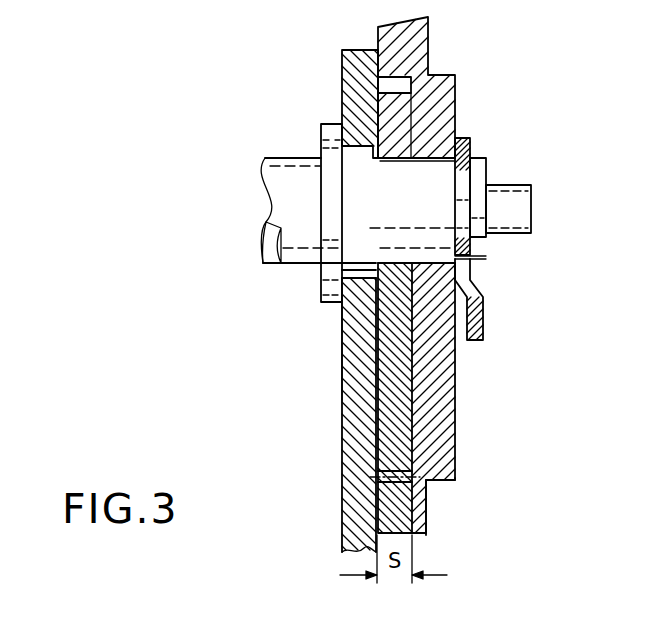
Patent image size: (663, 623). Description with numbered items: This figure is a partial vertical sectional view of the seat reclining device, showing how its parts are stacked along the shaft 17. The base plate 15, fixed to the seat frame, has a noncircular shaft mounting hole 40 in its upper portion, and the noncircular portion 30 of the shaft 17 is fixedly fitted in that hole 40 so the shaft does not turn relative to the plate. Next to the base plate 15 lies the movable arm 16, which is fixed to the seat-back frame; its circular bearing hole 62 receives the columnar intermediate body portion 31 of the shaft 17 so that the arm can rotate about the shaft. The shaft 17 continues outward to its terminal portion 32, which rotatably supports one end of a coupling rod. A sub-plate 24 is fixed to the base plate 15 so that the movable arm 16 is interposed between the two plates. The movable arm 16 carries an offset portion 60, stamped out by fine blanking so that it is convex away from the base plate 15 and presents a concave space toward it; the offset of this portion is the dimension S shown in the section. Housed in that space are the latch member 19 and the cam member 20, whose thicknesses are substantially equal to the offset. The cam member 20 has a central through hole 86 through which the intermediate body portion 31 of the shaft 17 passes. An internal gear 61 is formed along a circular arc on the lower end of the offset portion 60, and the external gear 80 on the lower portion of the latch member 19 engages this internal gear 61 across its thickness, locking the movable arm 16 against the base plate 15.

The base plate 15 is at (340, 350).
The movable arm 16 is at (458, 482).
The shaft 17 is at (268, 184).
The latch member 19 is at (405, 415).
The cam member 20 is at (442, 113).
The sub-plate 24 is at (484, 322).
The noncircular portion 30 is at (362, 143).
The columnar intermediate body portion 31 is at (471, 147).
The terminal portion 32 is at (524, 199).
The shaft mounting hole 40 is at (346, 152).
The offset portion 60 is at (447, 368).
The internal gear 61 is at (393, 463).
The bearing hole 62 is at (472, 258).
The external gear 80 is at (377, 487).
The through hole 86 is at (345, 268).